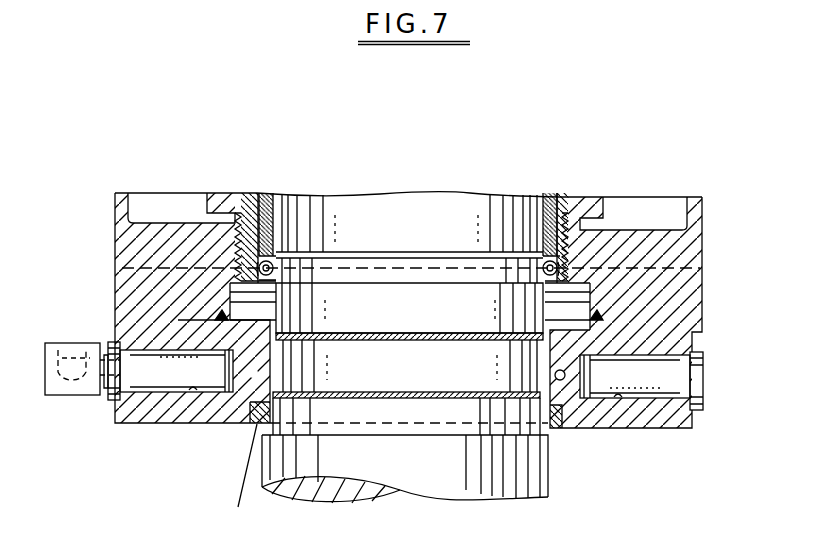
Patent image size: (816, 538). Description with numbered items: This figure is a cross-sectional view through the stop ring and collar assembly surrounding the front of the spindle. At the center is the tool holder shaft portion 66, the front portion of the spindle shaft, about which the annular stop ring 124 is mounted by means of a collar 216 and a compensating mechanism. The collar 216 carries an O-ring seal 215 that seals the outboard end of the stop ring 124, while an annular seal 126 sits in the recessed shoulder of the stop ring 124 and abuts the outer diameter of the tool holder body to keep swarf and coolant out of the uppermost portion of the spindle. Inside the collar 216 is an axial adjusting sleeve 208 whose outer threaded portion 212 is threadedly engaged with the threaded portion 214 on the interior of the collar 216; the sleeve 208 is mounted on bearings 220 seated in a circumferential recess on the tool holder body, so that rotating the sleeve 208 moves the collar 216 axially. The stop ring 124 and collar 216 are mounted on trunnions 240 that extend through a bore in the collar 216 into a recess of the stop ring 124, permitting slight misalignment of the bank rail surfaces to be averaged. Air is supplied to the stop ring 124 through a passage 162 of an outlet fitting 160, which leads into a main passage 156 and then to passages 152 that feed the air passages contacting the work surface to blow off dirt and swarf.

The tool holder shaft portion 66 is at (466, 490).
The annular stop ring 124 is at (218, 416).
The annular seal 126 is at (246, 481).
The passage 152 is at (562, 380).
The main passage 156 is at (113, 340).
The fitting 160 is at (67, 388).
The passage 162 is at (70, 340).
The axial adjusting sleeve 208 is at (572, 208).
The threaded portion 212 is at (617, 233).
The threaded portion 214 is at (254, 196).
The O-ring seal 215 is at (600, 322).
The collar 216 is at (125, 412).
The bearings 220 is at (280, 197).
The trunnions 240 is at (703, 400).